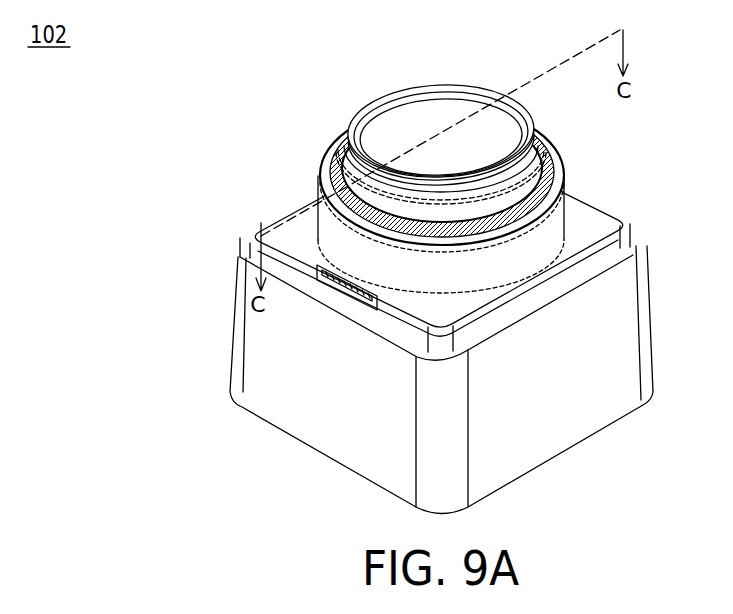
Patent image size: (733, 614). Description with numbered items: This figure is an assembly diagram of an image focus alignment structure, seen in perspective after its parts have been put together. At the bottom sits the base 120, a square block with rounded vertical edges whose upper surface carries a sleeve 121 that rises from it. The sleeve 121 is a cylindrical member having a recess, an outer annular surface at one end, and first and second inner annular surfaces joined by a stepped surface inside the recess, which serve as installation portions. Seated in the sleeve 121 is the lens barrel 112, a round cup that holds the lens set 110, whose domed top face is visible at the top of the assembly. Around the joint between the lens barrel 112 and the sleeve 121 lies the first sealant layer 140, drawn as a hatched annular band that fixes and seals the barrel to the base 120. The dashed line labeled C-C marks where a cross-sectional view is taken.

The lens set 110 is at (442, 97).
The lens barrel 112 is at (535, 160).
The base 120 is at (637, 240).
The sleeve 121 is at (553, 215).
The first sealant layer 140 is at (563, 167).